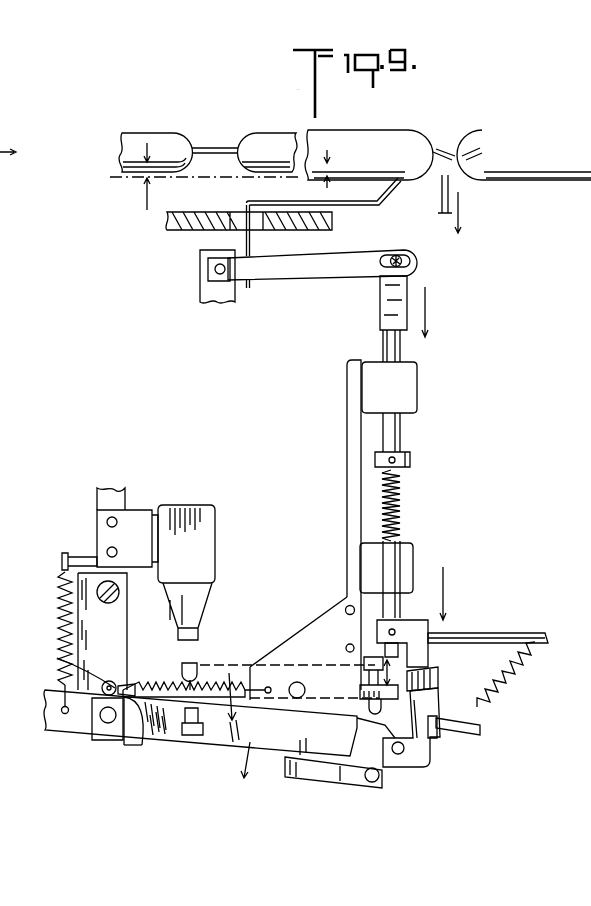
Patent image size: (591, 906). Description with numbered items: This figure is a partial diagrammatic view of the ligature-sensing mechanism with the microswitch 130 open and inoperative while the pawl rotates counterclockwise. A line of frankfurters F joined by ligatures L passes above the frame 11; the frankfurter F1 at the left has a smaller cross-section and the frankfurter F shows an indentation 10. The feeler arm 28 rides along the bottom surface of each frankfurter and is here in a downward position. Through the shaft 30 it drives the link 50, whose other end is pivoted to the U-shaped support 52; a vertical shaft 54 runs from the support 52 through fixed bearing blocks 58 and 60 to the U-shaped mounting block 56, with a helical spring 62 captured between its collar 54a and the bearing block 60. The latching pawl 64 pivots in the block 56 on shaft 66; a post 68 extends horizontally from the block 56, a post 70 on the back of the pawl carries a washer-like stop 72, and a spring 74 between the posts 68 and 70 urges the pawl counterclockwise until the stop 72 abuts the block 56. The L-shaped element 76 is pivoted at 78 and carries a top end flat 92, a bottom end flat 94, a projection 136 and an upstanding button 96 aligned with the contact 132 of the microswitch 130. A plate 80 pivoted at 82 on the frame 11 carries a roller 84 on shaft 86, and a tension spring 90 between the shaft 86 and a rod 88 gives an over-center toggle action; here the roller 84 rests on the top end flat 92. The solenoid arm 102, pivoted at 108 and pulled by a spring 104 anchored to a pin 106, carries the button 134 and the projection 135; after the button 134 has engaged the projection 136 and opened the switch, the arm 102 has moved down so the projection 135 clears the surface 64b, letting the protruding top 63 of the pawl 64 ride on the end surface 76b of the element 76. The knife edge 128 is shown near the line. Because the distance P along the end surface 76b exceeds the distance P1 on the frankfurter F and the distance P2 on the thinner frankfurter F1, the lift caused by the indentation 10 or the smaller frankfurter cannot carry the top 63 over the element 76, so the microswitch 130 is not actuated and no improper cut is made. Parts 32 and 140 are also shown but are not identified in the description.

The indentation 10 is at (332, 168).
The frame 11 is at (170, 222).
The feeler arm 28 is at (390, 190).
The shaft 30 is at (215, 269).
The bracket 32 is at (205, 293).
The link 50 is at (332, 266).
The U-shaped support 52 is at (385, 305).
The vertical shaft 54 is at (398, 435).
The collar 54a is at (410, 458).
The U-shaped mounting block 56 is at (427, 612).
The fixed bearing block 58 is at (410, 395).
The fixed bearing block 60 is at (405, 555).
The helical spring 62 is at (402, 500).
The protruding top of pawl 63 is at (438, 678).
The latching pawl 64 is at (438, 697).
The surface of pawl 64b is at (350, 718).
The shaft 66 is at (400, 756).
The post 68 is at (482, 638).
The post 70 is at (470, 728).
The stop 72 is at (437, 737).
The spring 74 is at (482, 700).
The L-shaped element 76 is at (226, 681).
The end surface of L-shaped element 76b is at (405, 665).
The pivot 78 is at (330, 654).
The plate 80 is at (98, 642).
The pivot 82 is at (112, 578).
The roller 84 is at (109, 681).
The shaft 86 is at (57, 660).
The rod 88 is at (296, 682).
The tension spring 90 is at (165, 728).
The top end flat 92 is at (134, 687).
The bottom end flat 94 is at (140, 738).
The upstanding button 96 is at (198, 664).
The solenoid arm 102 is at (224, 736).
The spring 104 is at (60, 616).
The pin 106 is at (80, 556).
The pivot 108 is at (103, 722).
The knife edge 128 is at (450, 178).
The microswitch 130 is at (203, 550).
The contact 132 is at (205, 612).
The button 134 is at (355, 770).
The projection 135 is at (370, 783).
The projection 136 is at (368, 702).
The pin 140 is at (112, 605).
The frankfurter F is at (389, 136).
The frankfurter of smaller cross-section F1 is at (126, 140).
The ligature L is at (211, 148).
The distance P1 is at (268, 152).
The distance P2 is at (143, 180).
The distance P is at (385, 676).